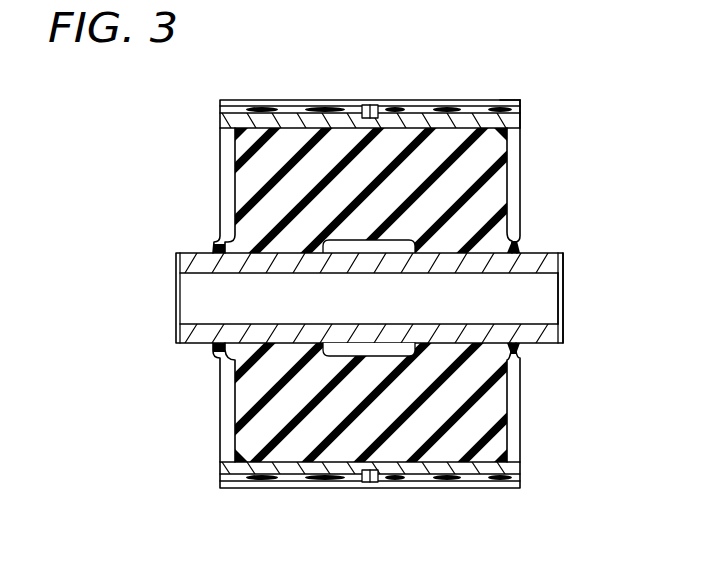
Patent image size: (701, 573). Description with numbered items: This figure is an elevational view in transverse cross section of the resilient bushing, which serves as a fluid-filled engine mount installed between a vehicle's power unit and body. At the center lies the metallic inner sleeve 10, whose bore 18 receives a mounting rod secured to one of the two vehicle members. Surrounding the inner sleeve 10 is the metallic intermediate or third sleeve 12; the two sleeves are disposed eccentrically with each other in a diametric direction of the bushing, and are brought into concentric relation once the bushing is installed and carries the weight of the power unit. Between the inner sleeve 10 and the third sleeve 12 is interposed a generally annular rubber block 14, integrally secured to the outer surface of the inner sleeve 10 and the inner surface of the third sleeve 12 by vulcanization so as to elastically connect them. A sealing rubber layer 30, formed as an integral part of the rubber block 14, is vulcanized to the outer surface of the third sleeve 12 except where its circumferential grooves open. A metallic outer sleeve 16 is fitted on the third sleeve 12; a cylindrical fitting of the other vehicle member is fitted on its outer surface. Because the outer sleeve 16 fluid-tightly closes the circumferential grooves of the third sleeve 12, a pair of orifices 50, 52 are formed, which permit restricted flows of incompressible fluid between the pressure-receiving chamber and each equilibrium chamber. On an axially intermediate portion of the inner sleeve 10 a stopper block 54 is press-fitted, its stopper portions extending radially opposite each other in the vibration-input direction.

The inner sleeve 10 is at (190, 257).
The third sleeve 12 is at (230, 122).
The rubber block 14 is at (522, 170).
The outer sleeve 16 is at (511, 100).
The bore 18 is at (532, 273).
The sealing rubber layer 30 is at (283, 106).
The orifice 50 is at (372, 105).
The orifice 52 is at (371, 482).
The stopper block 54 is at (335, 366).